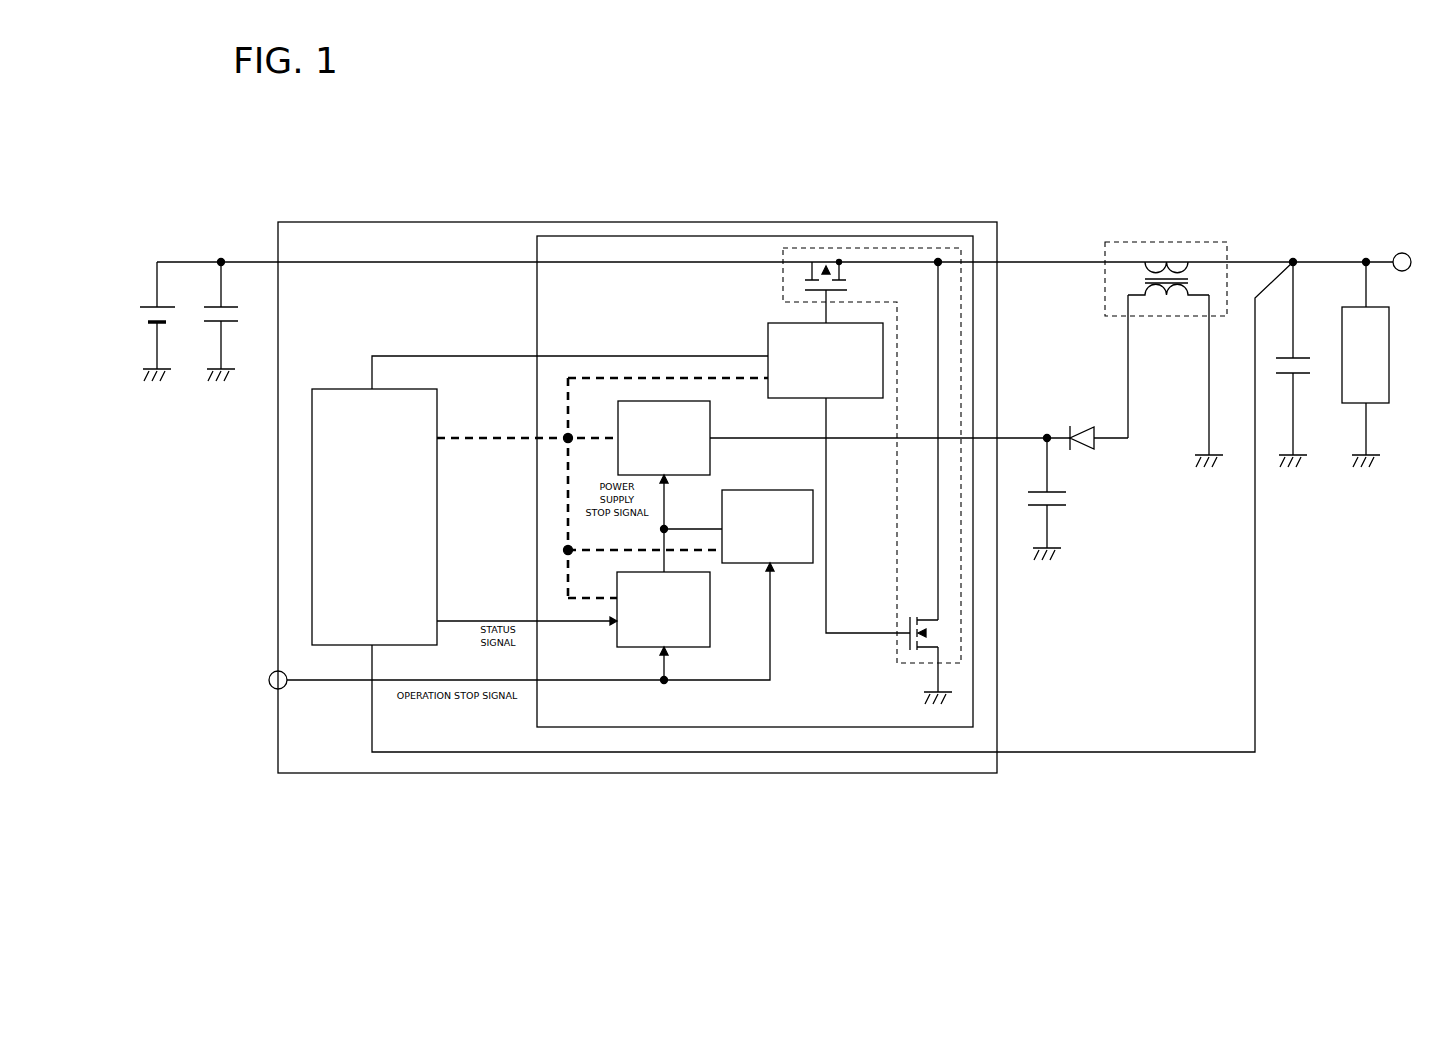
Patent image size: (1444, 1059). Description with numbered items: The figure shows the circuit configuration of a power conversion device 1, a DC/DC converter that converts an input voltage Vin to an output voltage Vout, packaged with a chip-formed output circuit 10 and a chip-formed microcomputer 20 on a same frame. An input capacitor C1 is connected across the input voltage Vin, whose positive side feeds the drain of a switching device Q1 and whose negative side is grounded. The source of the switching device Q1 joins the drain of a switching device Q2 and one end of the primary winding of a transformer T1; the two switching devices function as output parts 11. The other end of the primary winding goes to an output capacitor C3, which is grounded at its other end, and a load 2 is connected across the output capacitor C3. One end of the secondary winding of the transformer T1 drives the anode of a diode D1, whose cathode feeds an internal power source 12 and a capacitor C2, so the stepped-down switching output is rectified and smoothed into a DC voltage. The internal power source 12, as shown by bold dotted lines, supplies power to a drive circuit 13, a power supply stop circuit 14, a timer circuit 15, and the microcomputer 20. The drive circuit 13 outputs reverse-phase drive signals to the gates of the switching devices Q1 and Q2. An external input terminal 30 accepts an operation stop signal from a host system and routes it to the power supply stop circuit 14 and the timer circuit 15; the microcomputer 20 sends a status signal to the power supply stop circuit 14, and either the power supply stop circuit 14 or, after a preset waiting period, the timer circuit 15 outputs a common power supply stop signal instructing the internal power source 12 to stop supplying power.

The power conversion device 1 is at (652, 222).
The output circuit 10 is at (793, 236).
The output parts 11 is at (962, 353).
The internal power source 12 is at (713, 425).
The drive circuit 13 is at (768, 331).
The power supply stop circuit 14 is at (712, 612).
The timer circuit 15 is at (815, 512).
The microcomputer 20 is at (440, 400).
The external input terminal 30 is at (270, 674).
The load 2 is at (1389, 338).
The switching device Q1 is at (839, 292).
The switching device Q2 is at (929, 646).
The input capacitor C1 is at (225, 321).
The capacitor C2 is at (1054, 498).
The output capacitor C3 is at (1299, 364).
The diode D1 is at (1099, 426).
The transformer T1 is at (1166, 341).
The input voltage Vin is at (163, 321).
The output voltage Vout is at (1396, 251).